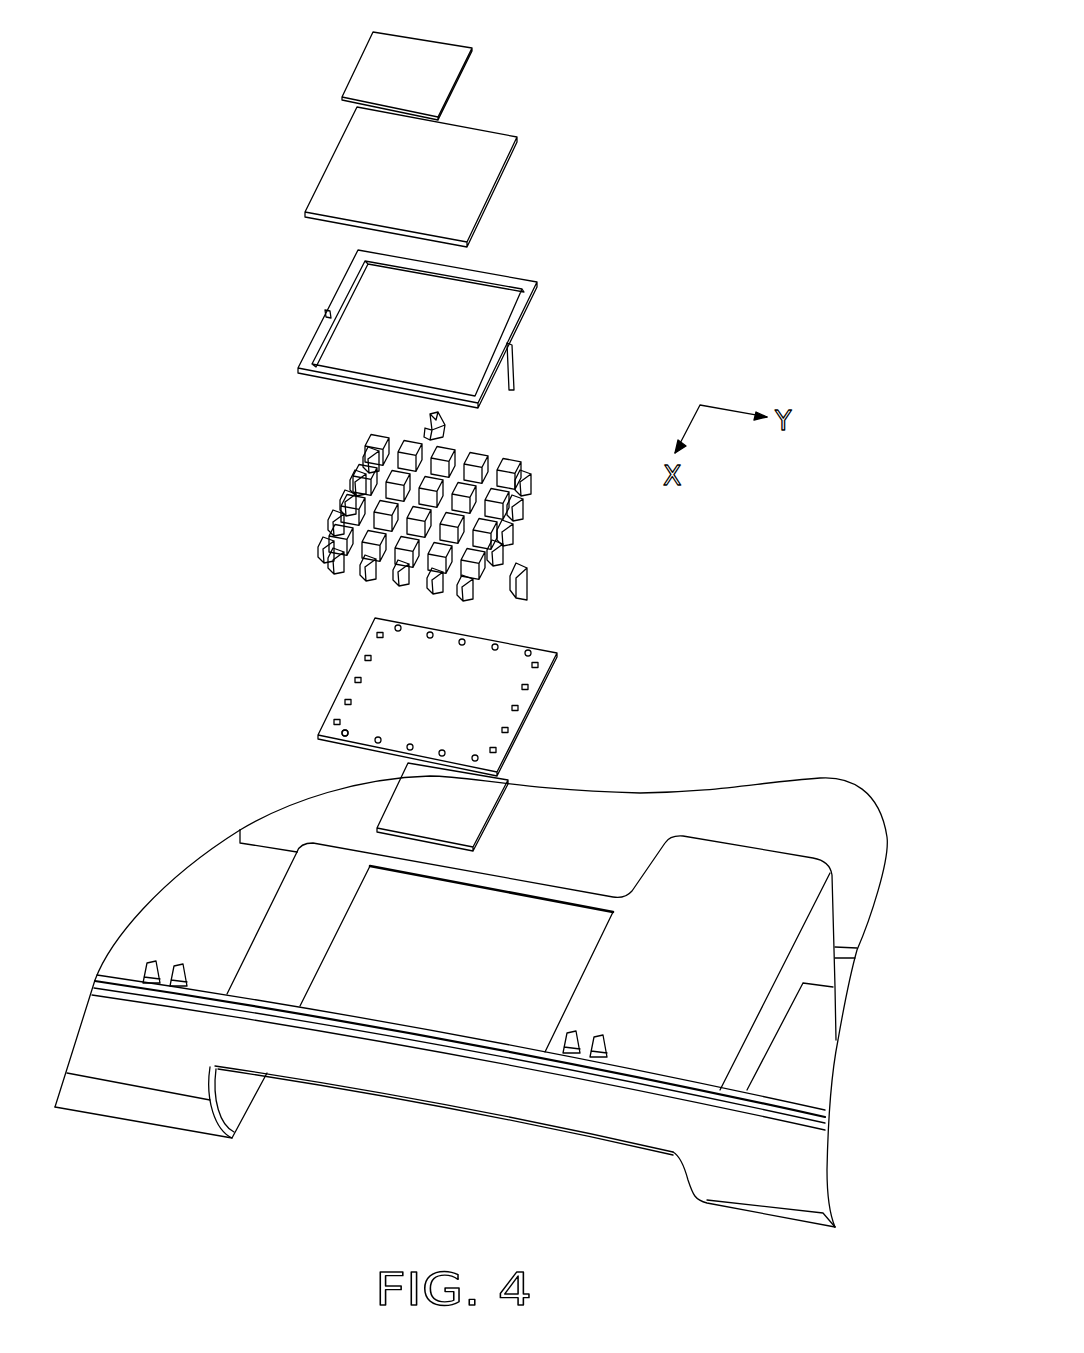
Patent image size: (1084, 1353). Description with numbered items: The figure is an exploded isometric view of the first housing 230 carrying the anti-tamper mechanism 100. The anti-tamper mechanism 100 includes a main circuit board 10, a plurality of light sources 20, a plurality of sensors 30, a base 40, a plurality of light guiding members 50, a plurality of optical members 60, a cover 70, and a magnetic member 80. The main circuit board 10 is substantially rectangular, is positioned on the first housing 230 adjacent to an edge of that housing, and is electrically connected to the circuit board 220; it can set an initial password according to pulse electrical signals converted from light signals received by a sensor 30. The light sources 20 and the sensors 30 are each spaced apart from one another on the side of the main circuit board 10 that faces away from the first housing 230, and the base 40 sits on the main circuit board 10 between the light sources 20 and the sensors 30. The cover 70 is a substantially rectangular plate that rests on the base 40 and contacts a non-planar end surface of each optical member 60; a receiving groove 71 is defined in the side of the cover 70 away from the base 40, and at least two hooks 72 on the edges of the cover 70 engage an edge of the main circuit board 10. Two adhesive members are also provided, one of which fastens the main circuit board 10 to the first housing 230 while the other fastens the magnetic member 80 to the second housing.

The anti-tamper mechanism 100 is at (328, 18).
The magnetic member 80 is at (495, 152).
The cover 70 is at (527, 293).
The receiving groove 71 is at (367, 313).
The hook 72 is at (517, 377).
The optical member 60 is at (447, 425).
The base 40 is at (360, 527).
The light guiding member 50 is at (523, 583).
The main circuit board 10 is at (442, 697).
The light source 20 is at (518, 708).
The sensor 30 is at (343, 733).
The circuit board 220 is at (500, 982).
The first housing 230 is at (757, 960).